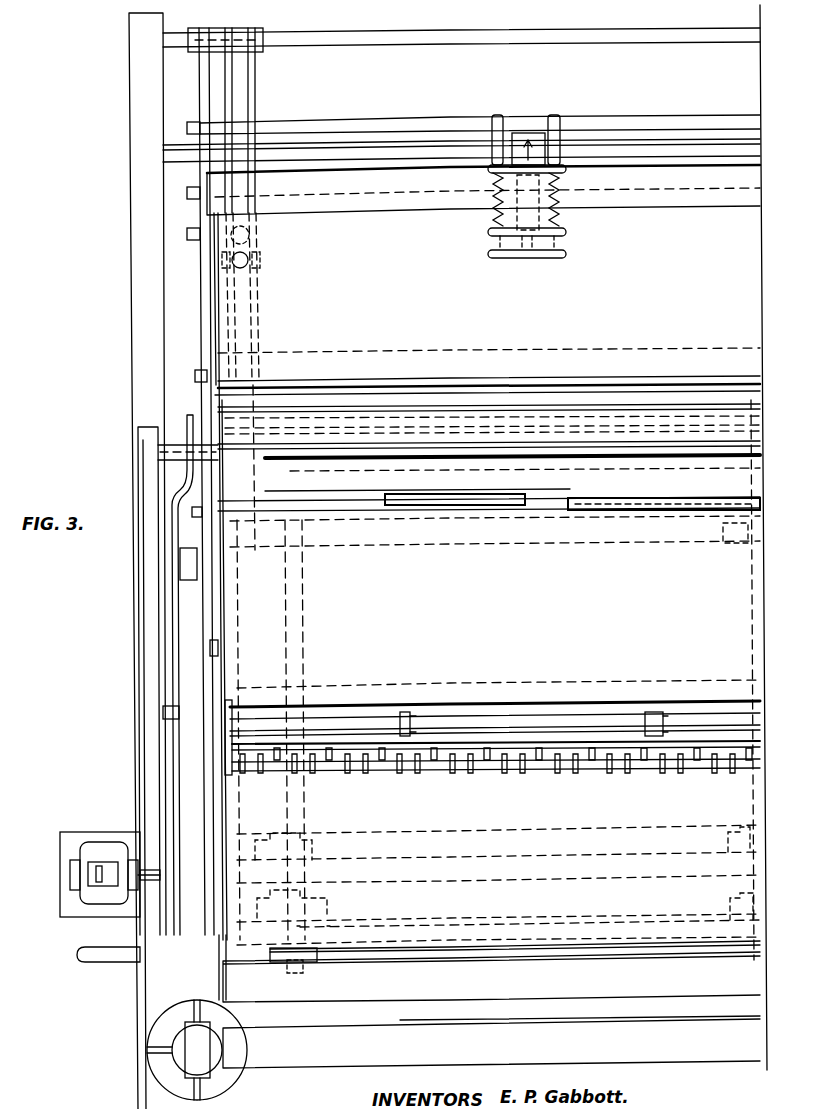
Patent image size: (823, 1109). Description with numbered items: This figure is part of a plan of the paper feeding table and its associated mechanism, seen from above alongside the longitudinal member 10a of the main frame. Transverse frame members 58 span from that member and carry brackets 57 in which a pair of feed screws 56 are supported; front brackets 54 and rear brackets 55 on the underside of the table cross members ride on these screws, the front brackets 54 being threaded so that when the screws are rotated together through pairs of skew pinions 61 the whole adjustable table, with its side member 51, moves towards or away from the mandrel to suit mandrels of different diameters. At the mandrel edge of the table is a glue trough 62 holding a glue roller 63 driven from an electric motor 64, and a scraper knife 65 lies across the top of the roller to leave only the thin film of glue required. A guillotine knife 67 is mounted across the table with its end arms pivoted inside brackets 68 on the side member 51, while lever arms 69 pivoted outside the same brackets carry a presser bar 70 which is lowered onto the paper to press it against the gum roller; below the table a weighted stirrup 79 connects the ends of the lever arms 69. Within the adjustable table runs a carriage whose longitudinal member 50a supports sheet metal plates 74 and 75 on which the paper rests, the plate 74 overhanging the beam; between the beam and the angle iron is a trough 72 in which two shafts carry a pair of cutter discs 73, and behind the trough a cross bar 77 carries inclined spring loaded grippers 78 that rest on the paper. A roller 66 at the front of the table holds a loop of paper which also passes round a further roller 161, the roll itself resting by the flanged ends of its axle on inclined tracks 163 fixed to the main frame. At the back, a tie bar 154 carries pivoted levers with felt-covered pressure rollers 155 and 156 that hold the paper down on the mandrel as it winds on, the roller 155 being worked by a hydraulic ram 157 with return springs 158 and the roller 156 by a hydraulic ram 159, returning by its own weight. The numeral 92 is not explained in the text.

The longitudinal member 10a is at (165, 255).
The side member 51 is at (180, 752).
The longitudinal member 50a is at (238, 645).
The front bracket 54 is at (318, 846).
The rear bracket 55 is at (722, 530).
The feed screw 56 is at (305, 642).
The bracket 57 is at (333, 912).
The transverse frame member 58 is at (160, 430).
The skew pinion 61 is at (305, 965).
The glue trough 62 is at (455, 406).
The glue roller 63 is at (275, 488).
The electric motor 64 is at (98, 855).
The scraper knife 65 is at (268, 460).
The roller 66 is at (487, 982).
The guillotine knife 67 is at (392, 494).
The bracket 68 is at (200, 580).
The lever arm 69 is at (172, 630).
The presser bar 70 is at (500, 405).
The trough 72 is at (262, 722).
The cutter disc 73 is at (408, 705).
The sheet metal plate 74 is at (218, 598).
The sheet metal plate 75 is at (220, 804).
The cross bar 77 is at (443, 768).
The spring loaded gripper 78 is at (515, 740).
The stirrup 79 is at (160, 712).
The panel 92 is at (487, 304).
The tie bar 154 is at (492, 18).
The pressure roller 155 is at (364, 165).
The pressure roller 156 is at (404, 352).
The hydraulic ram 157 is at (512, 184).
The return spring 158 is at (562, 202).
The hydraulic ram 159 is at (250, 272).
The roller 161 is at (505, 1068).
The inclined track 163 is at (138, 1102).